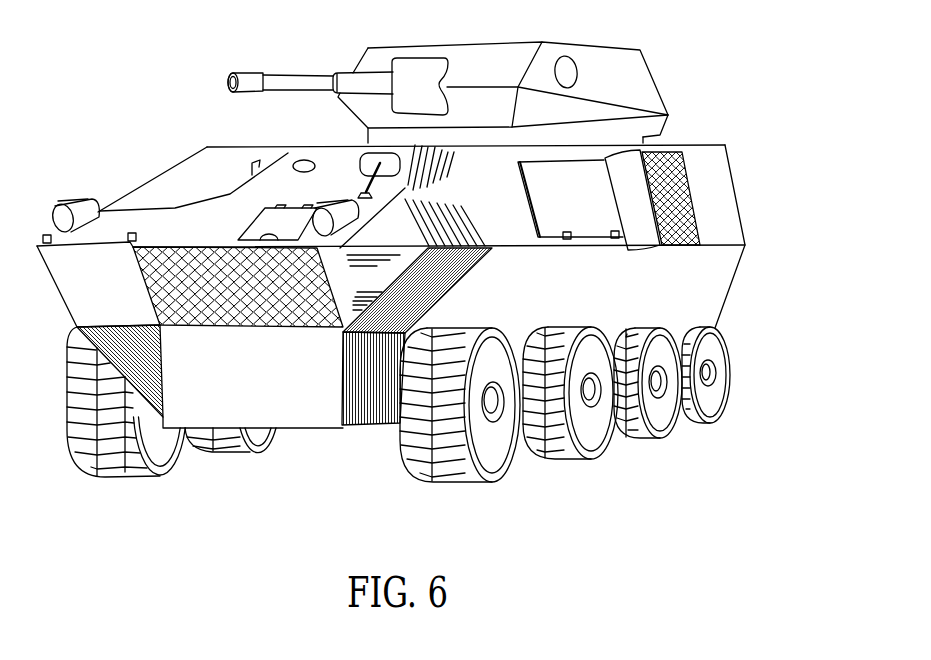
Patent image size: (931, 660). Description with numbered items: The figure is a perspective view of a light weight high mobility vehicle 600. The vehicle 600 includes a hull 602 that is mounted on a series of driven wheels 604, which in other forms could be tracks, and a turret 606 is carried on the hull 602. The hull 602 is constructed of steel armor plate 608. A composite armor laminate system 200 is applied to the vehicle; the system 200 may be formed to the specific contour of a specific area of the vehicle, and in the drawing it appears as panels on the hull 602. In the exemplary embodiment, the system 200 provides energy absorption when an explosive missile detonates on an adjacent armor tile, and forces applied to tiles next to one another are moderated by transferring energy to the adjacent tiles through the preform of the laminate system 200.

The light weight high mobility vehicle 600 is at (168, 149).
The hull 602 is at (734, 138).
The driven wheels 604 is at (734, 321).
The turret 606 is at (649, 41).
The steel armor plate 608 is at (250, 147).
The composite armor laminate system 200 is at (204, 253).